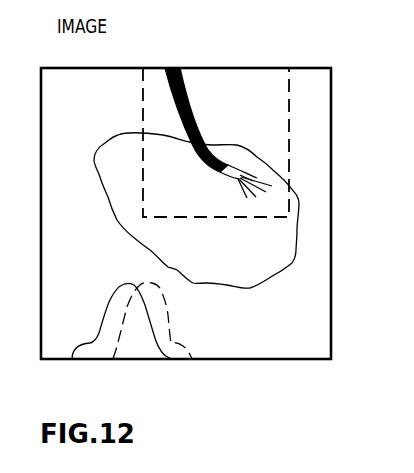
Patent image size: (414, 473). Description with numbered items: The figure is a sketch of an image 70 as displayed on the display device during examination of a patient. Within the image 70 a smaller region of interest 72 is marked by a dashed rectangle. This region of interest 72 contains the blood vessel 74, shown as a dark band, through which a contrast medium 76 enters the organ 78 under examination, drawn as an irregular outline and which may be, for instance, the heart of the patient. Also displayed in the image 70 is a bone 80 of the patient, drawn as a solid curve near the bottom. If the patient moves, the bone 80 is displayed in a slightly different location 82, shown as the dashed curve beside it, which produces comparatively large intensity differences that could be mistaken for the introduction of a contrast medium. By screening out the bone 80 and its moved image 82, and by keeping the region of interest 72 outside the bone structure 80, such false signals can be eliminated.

The image 70 is at (89, 78).
The region of interest 72 is at (252, 84).
The blood vessel 74 is at (257, 178).
The contrast medium 76 is at (171, 80).
The organ 78 is at (292, 263).
The bone 80 is at (72, 359).
The moved image of the bone 82 is at (187, 360).